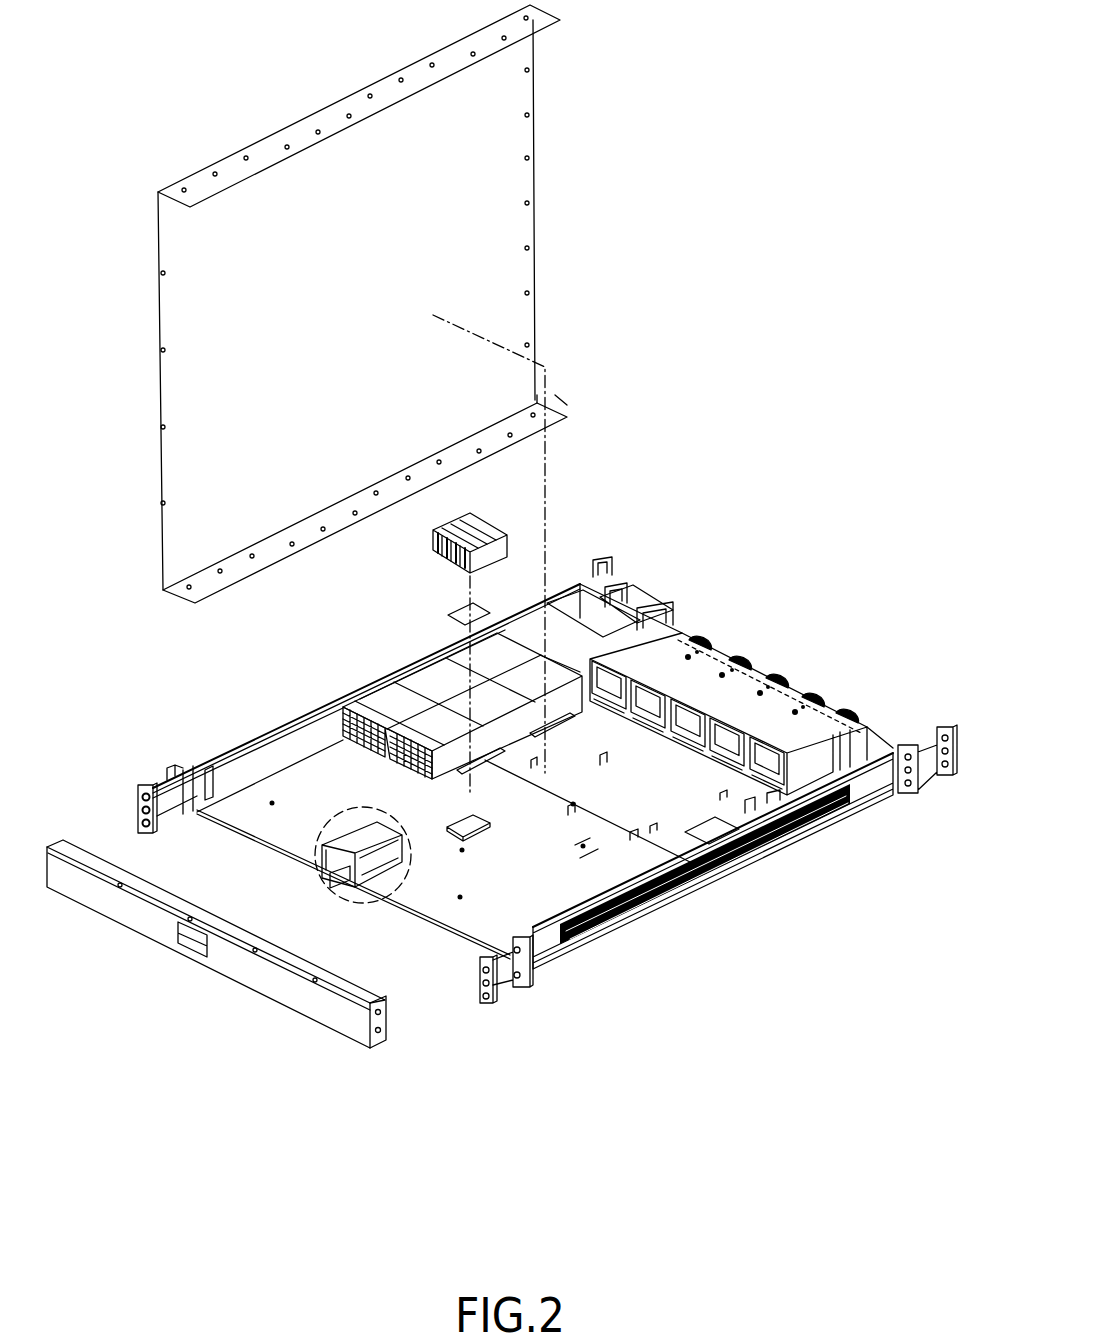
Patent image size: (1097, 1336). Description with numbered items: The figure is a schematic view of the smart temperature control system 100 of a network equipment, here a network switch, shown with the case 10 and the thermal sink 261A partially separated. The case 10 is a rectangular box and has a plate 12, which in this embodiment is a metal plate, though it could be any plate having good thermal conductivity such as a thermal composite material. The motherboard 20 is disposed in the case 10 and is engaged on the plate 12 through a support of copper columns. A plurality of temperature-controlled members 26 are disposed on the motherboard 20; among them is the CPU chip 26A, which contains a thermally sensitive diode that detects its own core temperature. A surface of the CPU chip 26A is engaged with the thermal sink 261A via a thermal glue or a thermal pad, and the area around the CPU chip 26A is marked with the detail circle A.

The smart temperature control system 100 is at (662, 528).
The case 10 is at (817, 835).
The plate 12 is at (653, 785).
The motherboard 20 is at (682, 896).
The temperature-controlled members 26 is at (587, 850).
The CPU chip 26A is at (489, 830).
The thermal sink 261A is at (433, 552).
The detail area A is at (343, 812).